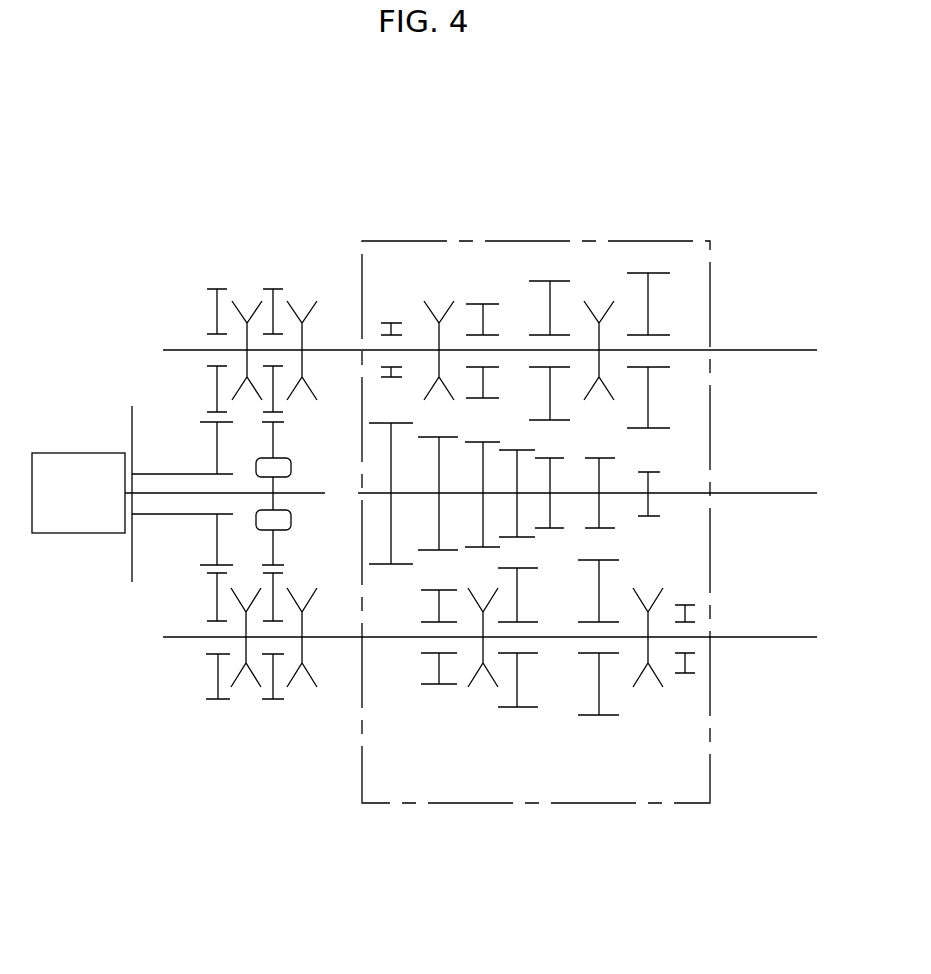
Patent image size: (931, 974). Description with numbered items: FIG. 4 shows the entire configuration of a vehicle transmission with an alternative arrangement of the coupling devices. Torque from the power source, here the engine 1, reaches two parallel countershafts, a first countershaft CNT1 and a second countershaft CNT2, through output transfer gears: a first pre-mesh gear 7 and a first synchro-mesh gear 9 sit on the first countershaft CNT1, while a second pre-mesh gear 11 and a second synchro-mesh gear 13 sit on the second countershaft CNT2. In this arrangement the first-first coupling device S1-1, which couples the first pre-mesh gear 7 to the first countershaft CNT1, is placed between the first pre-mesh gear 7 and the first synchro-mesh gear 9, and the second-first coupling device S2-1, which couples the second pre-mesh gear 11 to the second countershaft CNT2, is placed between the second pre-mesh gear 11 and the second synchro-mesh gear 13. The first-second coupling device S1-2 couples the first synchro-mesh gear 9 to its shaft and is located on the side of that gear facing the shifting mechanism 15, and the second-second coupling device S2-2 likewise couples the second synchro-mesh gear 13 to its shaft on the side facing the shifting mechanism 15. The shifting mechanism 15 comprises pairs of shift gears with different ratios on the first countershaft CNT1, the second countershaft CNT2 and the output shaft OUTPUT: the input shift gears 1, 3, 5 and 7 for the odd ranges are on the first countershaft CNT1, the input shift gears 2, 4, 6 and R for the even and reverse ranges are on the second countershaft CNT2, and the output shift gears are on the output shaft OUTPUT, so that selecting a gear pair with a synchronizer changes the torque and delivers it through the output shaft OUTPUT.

The engine 1 is at (391, 339).
The 2-range input shift gear 2 is at (439, 652).
The first input transfer gear 3 is at (482, 340).
The 4-range input shift gear 4 is at (518, 652).
The second input transfer gear 5 is at (549, 340).
The 6-range input shift gear 6 is at (598, 652).
The first pre-mesh gear 7 is at (219, 289).
The first synchro-mesh gear 9 is at (274, 289).
The second pre-mesh gear 11 is at (215, 699).
The second synchro-mesh gear 13 is at (268, 699).
The shifting mechanism 15 is at (527, 236).
The R-range input shift gear R is at (685, 650).
The first-first coupling device S1-1 is at (232, 313).
The first-second coupling device S1-2 is at (313, 306).
The second-first coupling device S2-1 is at (233, 683).
The second-second coupling device S2-2 is at (298, 683).
The first countershaft CNT1 is at (762, 350).
The second countershaft CNT2 is at (760, 637).
The output shaft OUTPUT is at (760, 493).